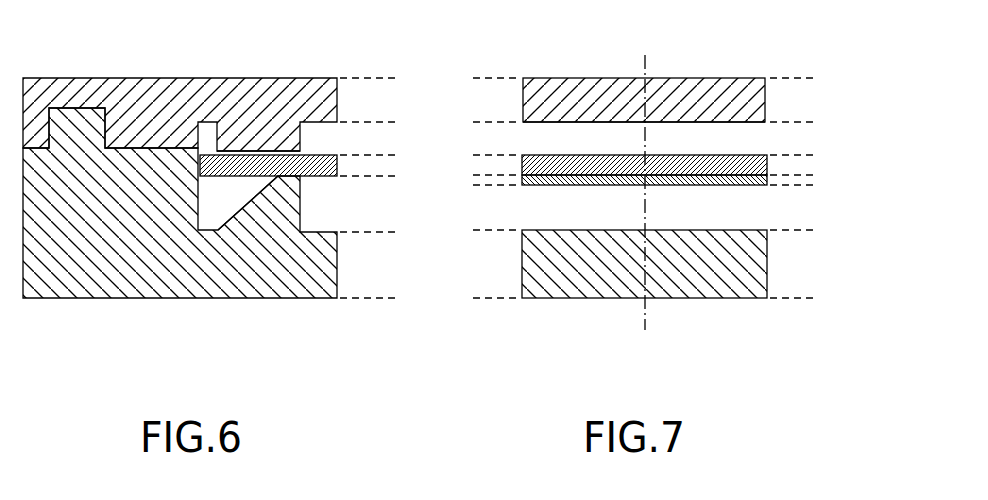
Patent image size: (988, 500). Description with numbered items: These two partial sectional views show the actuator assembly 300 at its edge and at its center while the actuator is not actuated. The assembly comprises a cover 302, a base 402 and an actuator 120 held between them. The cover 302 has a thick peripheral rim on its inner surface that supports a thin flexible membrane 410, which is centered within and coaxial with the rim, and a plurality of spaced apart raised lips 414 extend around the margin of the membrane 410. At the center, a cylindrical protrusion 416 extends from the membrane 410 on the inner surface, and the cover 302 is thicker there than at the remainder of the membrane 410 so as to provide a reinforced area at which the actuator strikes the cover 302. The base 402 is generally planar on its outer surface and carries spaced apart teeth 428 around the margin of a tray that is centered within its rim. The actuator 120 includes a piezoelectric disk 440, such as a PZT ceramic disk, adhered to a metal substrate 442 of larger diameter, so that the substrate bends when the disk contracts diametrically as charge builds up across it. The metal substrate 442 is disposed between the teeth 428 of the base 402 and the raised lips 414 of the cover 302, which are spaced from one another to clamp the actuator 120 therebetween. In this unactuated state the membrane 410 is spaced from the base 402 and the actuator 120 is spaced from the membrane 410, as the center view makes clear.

In FIG. 6, the actuator assembly 300 is at (75, 48).
In FIG. 7, the actuator assembly 300 is at (577, 60).
In FIG. 6, the cover 302 is at (125, 78).
In FIG. 6, the base 402 is at (120, 268).
In FIG. 7, the base 402 is at (602, 290).
In FIG. 6, the raised lips 414 is at (272, 150).
In FIG. 6, the teeth 428 is at (283, 177).
In FIG. 6, the metal substrate 442 is at (340, 167).
In FIG. 7, the flexible membrane 410 is at (748, 100).
In FIG. 7, the cylindrical protrusion 416 is at (660, 122).
In FIG. 7, the piezoelectric disk 440 is at (768, 186).
In FIG. 7, the actuator 120 is at (523, 172).